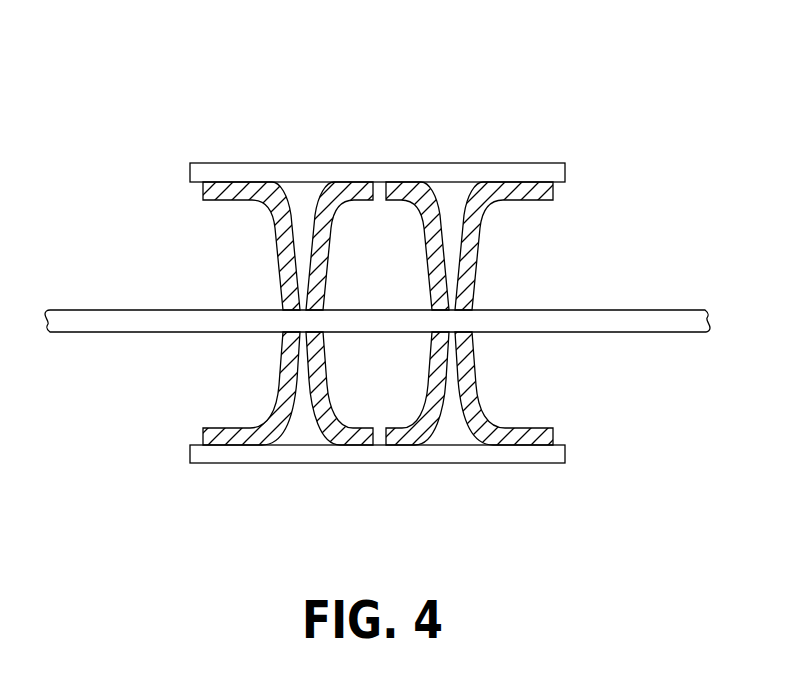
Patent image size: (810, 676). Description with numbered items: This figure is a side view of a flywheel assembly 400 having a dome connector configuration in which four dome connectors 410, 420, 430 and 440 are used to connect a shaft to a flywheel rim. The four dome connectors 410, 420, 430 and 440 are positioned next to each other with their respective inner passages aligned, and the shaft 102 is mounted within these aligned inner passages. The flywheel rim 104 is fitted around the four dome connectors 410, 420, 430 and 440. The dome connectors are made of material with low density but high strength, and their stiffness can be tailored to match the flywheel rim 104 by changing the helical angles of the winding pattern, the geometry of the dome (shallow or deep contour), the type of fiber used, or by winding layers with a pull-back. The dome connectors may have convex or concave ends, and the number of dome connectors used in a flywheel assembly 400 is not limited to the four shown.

The flywheel assembly 400 is at (658, 78).
The shaft 102 is at (647, 309).
The flywheel rim 104 is at (533, 163).
The dome connector 410 is at (240, 438).
The dome connector 420 is at (320, 408).
The dome connector 430 is at (437, 418).
The dome connector 440 is at (515, 435).